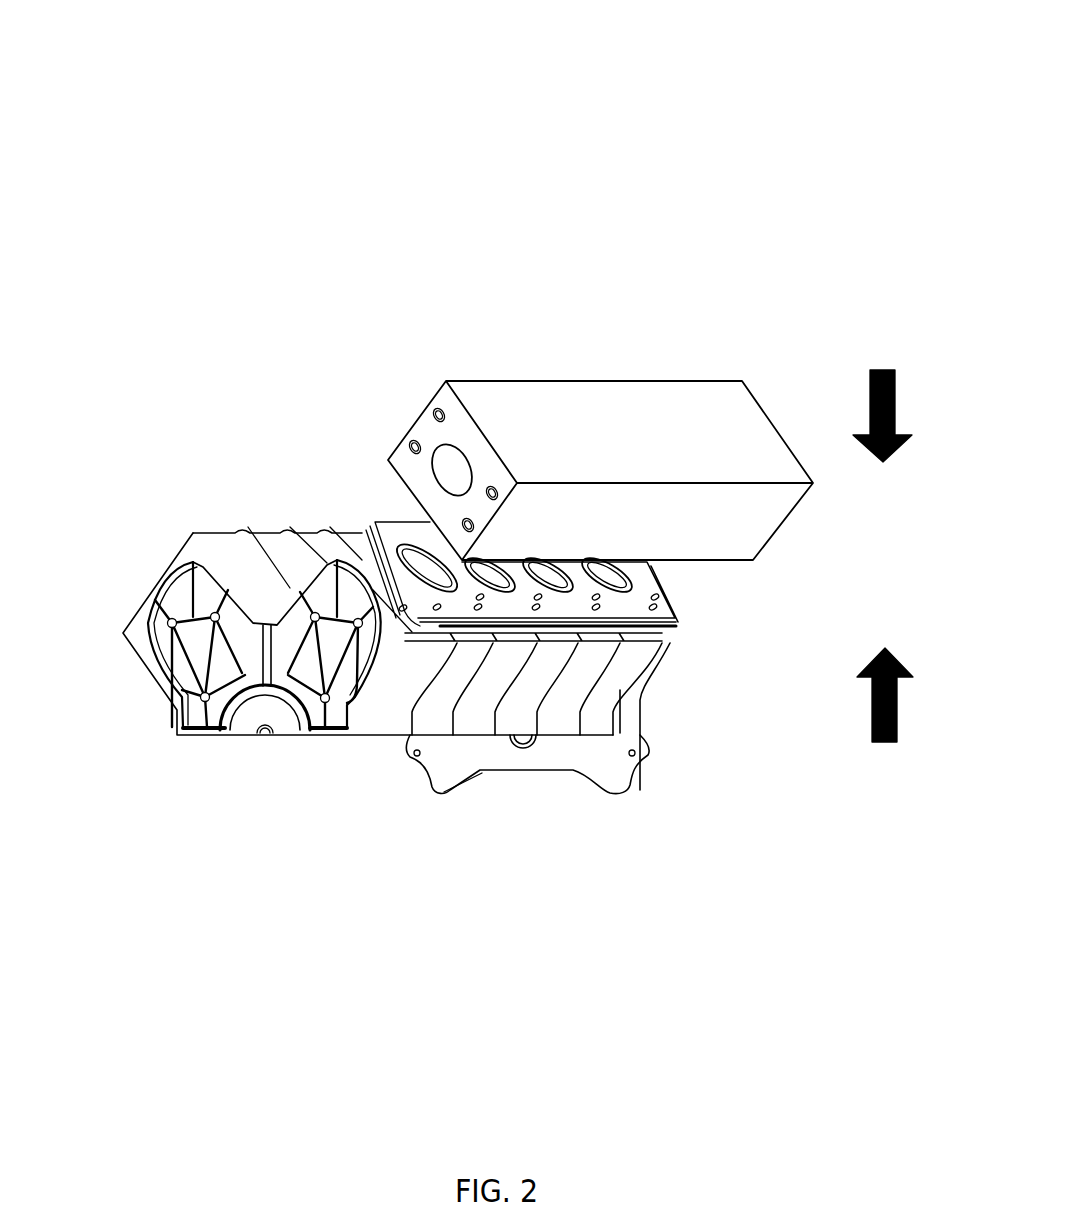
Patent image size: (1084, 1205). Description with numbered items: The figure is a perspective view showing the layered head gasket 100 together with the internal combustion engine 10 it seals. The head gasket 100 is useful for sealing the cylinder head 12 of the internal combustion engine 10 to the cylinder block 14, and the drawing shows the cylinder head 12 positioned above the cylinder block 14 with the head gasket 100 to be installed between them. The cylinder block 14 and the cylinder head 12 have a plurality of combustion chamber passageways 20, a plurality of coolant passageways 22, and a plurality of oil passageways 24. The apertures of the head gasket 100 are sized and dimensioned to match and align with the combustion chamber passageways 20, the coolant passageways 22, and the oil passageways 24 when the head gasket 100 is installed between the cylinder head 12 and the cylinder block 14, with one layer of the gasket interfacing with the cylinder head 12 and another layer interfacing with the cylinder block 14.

The internal combustion engine 10 is at (426, 528).
The cylinder head 12 is at (423, 423).
The cylinder block 14 is at (368, 631).
The combustion chamber passageways 20 is at (511, 575).
The coolant passageways 22 is at (660, 598).
The oil passageways 24 is at (598, 608).
The head gasket 100 is at (855, 52).